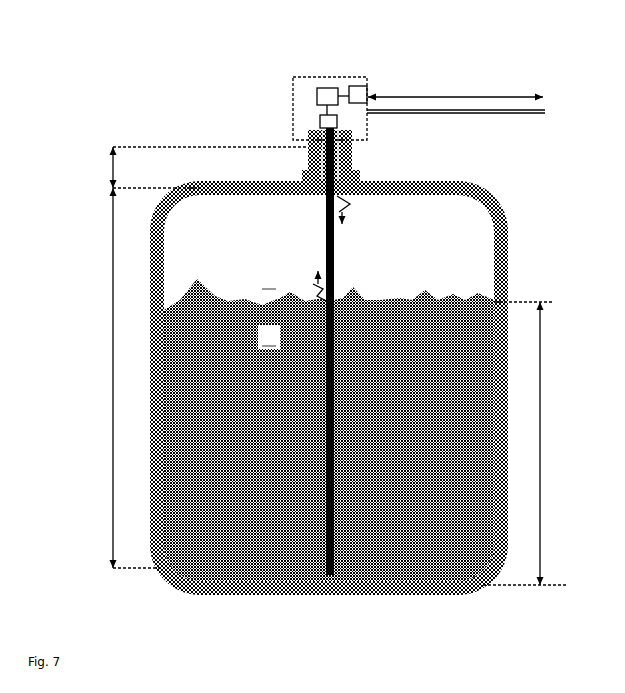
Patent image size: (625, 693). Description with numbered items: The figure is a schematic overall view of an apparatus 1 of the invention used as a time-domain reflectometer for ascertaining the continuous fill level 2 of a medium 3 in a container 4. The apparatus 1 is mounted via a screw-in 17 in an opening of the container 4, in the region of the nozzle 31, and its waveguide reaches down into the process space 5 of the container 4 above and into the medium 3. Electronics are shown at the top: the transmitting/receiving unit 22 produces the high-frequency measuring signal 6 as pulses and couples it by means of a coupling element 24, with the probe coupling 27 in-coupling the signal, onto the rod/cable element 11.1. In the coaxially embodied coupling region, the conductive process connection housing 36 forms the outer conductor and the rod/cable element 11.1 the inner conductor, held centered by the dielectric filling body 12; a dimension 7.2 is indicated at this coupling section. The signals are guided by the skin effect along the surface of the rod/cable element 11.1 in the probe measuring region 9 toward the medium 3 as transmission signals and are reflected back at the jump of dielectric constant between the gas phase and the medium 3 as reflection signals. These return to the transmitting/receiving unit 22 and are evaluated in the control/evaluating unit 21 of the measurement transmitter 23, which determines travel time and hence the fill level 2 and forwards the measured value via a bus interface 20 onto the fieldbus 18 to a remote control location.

The apparatus 1 is at (205, 75).
The fill level 2 is at (541, 378).
The medium 3 is at (214, 288).
The container 4 is at (489, 205).
The process space 5 is at (458, 229).
The high-frequency measuring signal 6 is at (381, 252).
The installation height dimension 7.2 is at (110, 163).
The probe measuring region 9 is at (111, 258).
The rod/cable element 11.1 is at (334, 250).
The dielectric filling body 12 is at (353, 155).
The screw-in 17 is at (313, 196).
The fieldbus 18 is at (490, 97).
The bus interface 20 is at (368, 92).
The control/evaluating unit 21 is at (317, 94).
The transmitting/receiving unit 22 is at (320, 121).
The measurement transmitter 23 is at (330, 108).
The coupling element 24 is at (300, 160).
The probe coupling 27 is at (315, 148).
The nozzle 31 is at (360, 179).
The process connection housing 36 is at (356, 140).